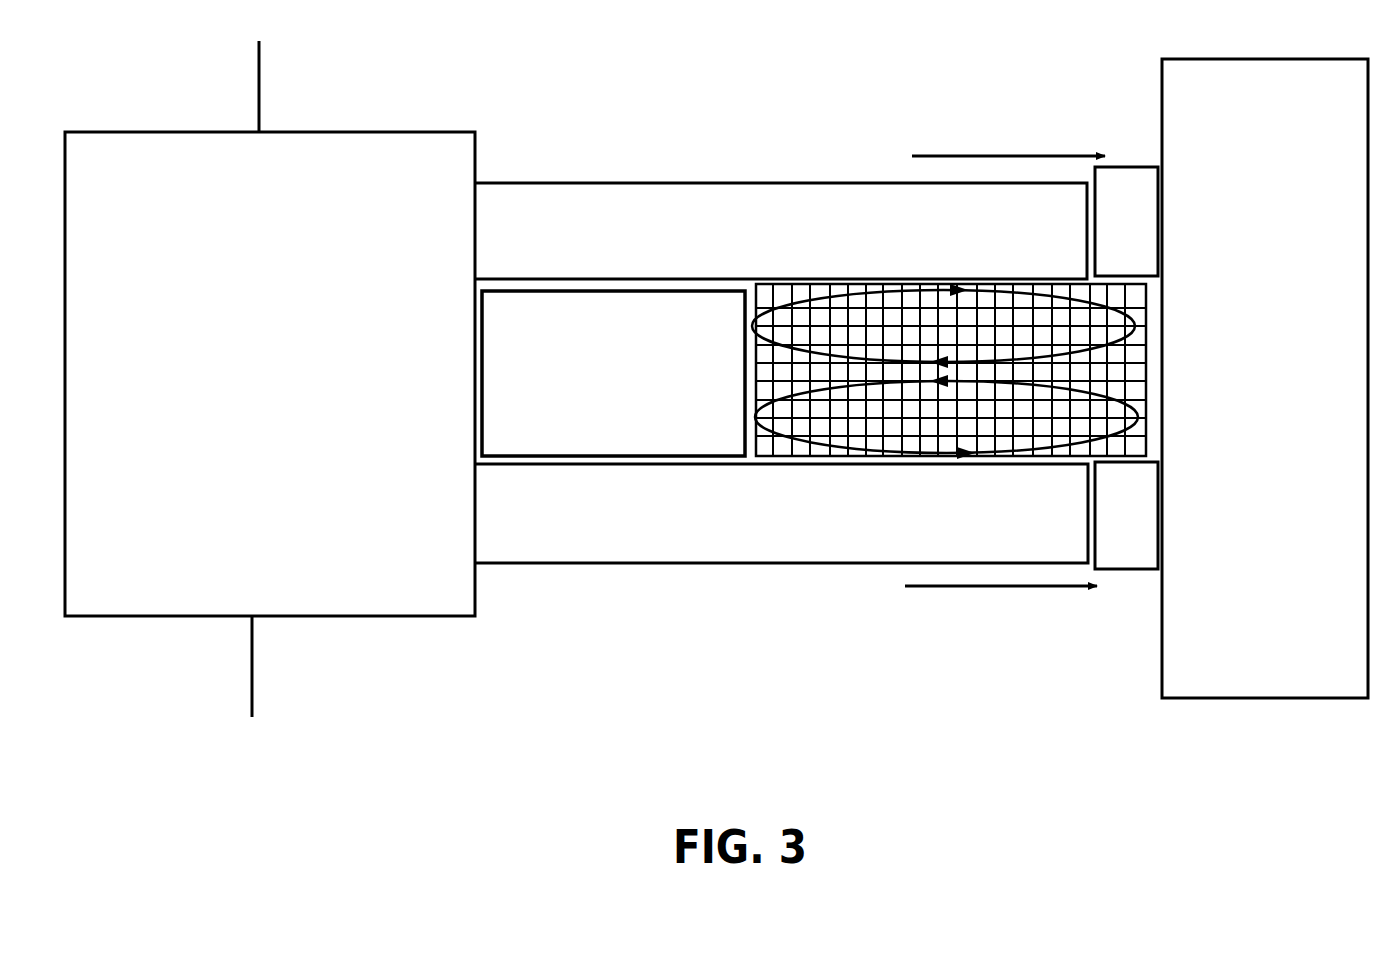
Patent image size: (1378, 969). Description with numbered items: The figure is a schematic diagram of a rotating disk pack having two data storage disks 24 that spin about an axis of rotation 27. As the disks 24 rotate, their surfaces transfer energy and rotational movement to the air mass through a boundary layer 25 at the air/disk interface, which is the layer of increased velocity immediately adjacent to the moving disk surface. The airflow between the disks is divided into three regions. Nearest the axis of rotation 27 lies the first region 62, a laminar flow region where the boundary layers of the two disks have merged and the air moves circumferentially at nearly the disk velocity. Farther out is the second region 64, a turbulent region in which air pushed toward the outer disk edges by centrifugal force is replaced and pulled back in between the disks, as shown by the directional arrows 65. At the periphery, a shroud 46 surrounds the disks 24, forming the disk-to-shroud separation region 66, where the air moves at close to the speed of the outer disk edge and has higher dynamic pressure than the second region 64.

The data storage disks 24 is at (645, 193).
The boundary layer 25 is at (958, 153).
The axis of rotation 27 is at (253, 660).
The shroud 46 is at (1162, 650).
The first region 62 is at (510, 320).
The second region 64 is at (782, 295).
The directional arrows 65 is at (855, 297).
The disk-to-shroud separation region 66 is at (1125, 195).